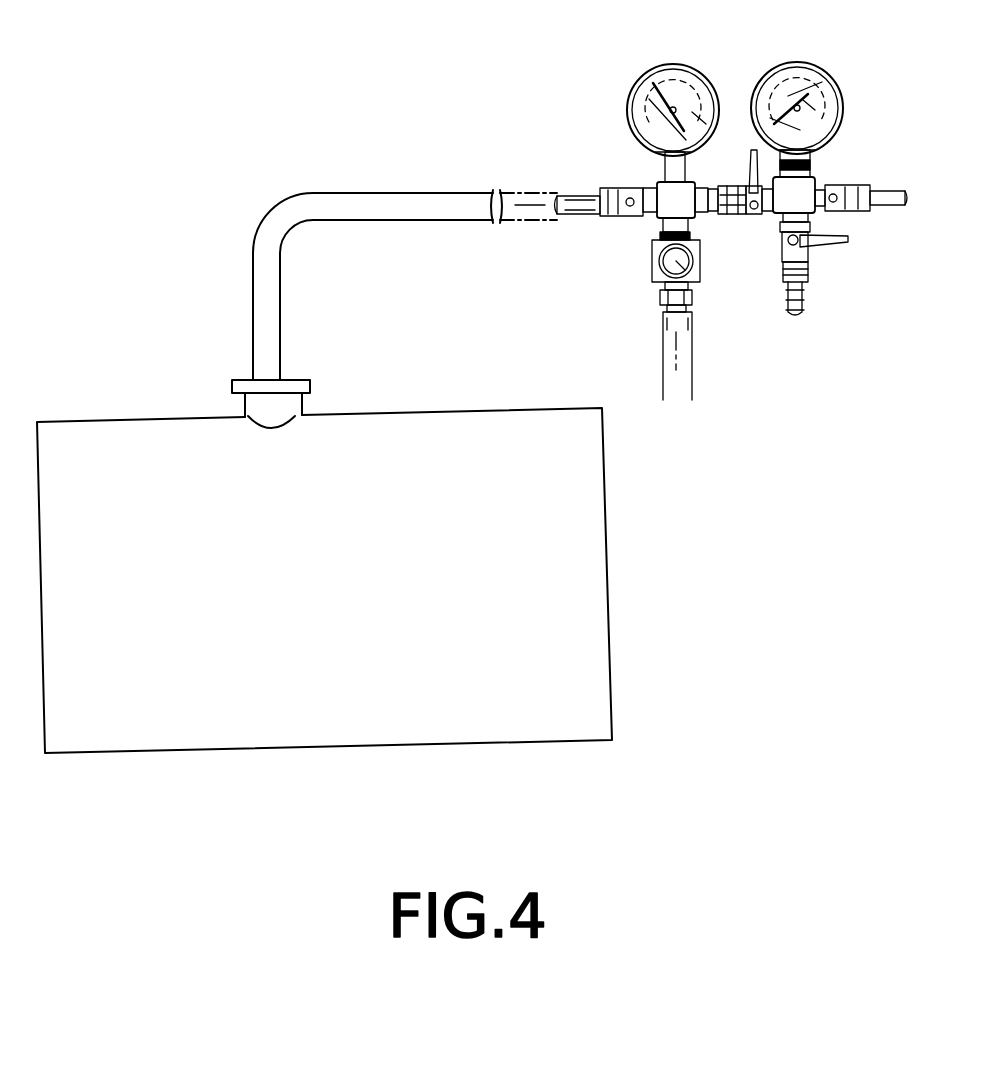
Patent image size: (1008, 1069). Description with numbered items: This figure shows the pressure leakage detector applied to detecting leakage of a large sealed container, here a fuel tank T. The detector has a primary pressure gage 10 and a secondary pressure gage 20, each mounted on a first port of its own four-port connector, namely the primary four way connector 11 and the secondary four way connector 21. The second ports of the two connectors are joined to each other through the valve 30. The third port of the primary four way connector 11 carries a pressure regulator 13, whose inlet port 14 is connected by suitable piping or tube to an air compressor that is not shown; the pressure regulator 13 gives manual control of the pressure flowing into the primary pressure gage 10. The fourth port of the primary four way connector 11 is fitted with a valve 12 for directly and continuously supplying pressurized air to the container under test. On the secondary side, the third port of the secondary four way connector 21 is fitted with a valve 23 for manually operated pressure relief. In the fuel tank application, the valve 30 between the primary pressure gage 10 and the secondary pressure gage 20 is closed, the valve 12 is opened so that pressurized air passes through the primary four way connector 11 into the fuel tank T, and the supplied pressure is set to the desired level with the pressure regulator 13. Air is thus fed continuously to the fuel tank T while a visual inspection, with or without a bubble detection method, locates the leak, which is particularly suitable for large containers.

The primary pressure gage 10 is at (673, 65).
The primary four way connector 11 is at (690, 212).
The valve 12 is at (611, 188).
The pressure regulator 13 is at (692, 258).
The inlet port 14 is at (690, 300).
The secondary pressure gage 20 is at (797, 62).
The secondary four way connector 21 is at (806, 190).
The valve 23 is at (808, 244).
The valve 30 is at (750, 178).
The fuel tank T is at (590, 531).